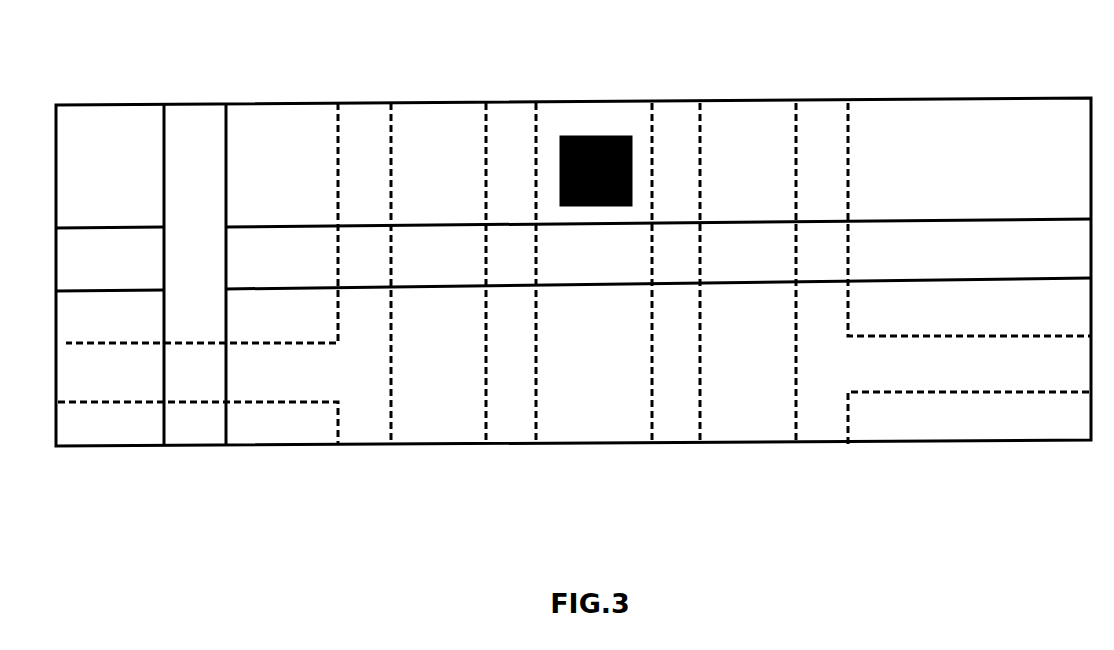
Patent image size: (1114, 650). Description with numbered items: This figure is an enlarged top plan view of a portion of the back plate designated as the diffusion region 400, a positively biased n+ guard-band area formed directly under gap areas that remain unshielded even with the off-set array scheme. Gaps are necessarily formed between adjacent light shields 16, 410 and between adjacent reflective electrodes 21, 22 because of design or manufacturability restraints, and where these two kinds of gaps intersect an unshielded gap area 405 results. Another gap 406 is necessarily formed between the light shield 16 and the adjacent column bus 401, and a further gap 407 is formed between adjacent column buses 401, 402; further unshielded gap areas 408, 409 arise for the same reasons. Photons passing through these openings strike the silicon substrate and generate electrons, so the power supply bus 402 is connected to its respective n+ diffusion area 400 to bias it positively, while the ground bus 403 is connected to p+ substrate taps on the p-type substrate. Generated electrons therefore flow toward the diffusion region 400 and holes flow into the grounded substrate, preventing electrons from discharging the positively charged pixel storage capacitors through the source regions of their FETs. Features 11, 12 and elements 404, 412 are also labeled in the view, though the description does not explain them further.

The diffusion region 400 is at (955, 92).
The column bus 401 is at (455, 110).
The power supply bus 402 is at (607, 107).
The ground bus 403 is at (767, 108).
The contact 404 is at (628, 155).
The unshielded gap area 405 is at (197, 367).
The gap 406 is at (358, 253).
The gap 407 is at (503, 253).
The unshielded gap area 408 is at (675, 253).
The unshielded gap area 409 is at (818, 248).
The light shield 410 is at (337, 405).
The dashed boundary 412 is at (845, 145).
The light shield 16 is at (335, 133).
The gate electrode 12 is at (223, 181).
The diffusion line 11 is at (162, 199).
The reflective electrode 21 is at (152, 287).
The reflective electrode 22 is at (233, 287).